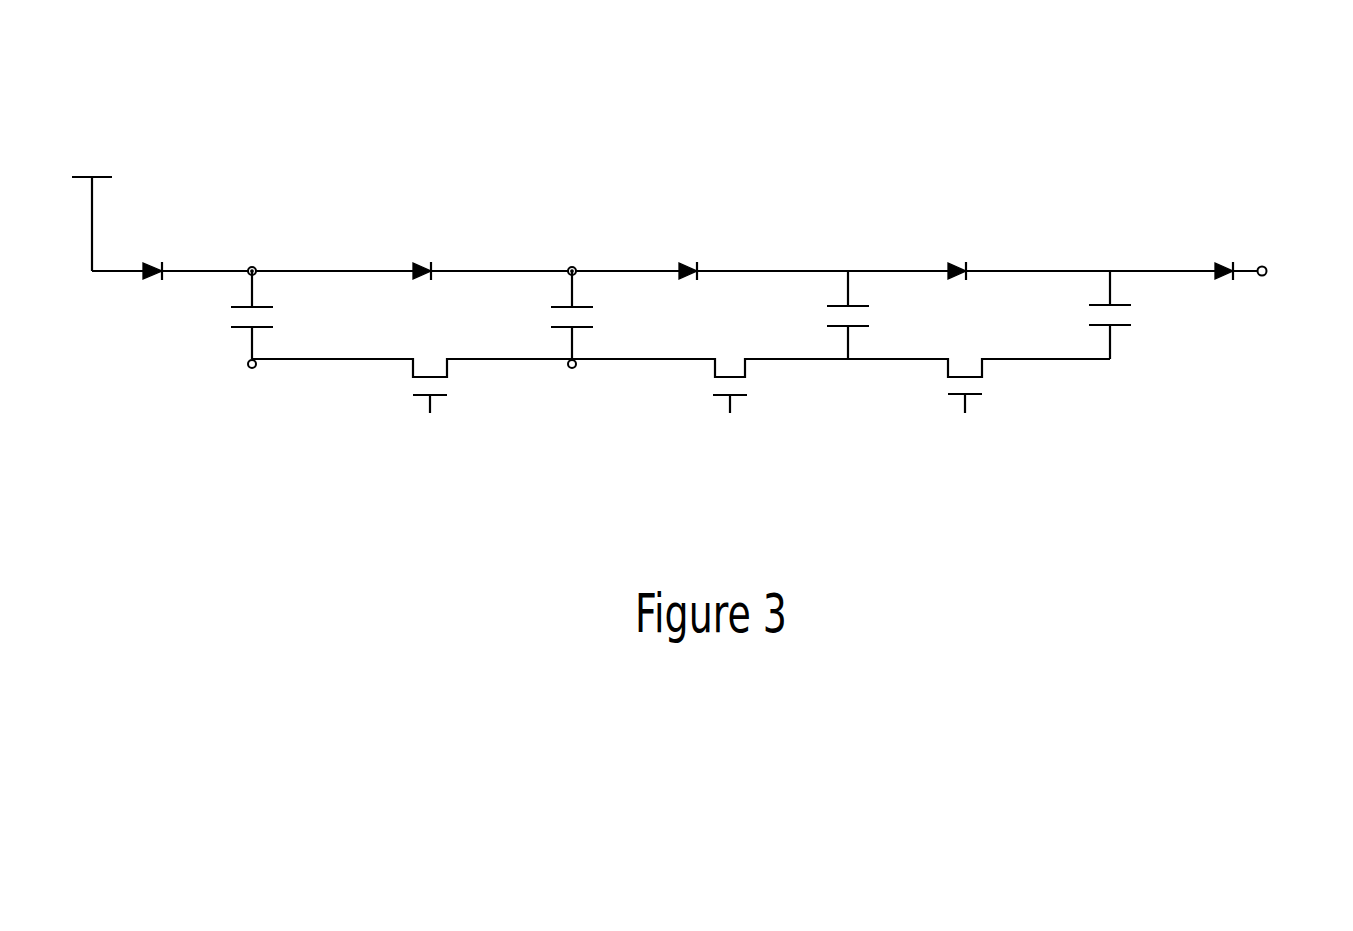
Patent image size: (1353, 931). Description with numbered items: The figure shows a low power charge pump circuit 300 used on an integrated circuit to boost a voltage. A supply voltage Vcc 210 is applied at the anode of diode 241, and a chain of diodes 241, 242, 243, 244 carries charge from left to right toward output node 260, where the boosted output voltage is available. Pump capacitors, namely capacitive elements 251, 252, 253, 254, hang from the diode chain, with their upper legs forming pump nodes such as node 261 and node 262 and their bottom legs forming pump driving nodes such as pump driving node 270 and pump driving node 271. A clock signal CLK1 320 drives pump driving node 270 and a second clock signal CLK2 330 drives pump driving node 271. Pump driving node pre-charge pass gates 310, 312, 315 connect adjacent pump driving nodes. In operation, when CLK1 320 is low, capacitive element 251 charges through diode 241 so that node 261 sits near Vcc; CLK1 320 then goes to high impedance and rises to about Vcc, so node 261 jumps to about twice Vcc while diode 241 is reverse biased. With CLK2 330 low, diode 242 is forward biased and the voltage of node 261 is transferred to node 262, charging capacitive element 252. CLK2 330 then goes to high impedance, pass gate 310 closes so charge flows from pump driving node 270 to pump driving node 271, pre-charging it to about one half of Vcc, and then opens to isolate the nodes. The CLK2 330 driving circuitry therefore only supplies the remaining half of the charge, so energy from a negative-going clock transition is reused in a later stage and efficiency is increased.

The low power charge pump circuit 300 is at (324, 52).
The supply voltage Vcc 210 is at (118, 202).
The diode 241 is at (160, 262).
The diode 242 is at (429, 262).
The diode 243 is at (695, 262).
The diode 244 is at (964, 262).
The capacitive element 251 is at (232, 320).
The capacitive element 252 is at (553, 318).
The capacitive element 253 is at (830, 318).
The capacitive element 254 is at (1094, 316).
The output node 260 is at (1275, 271).
The node 261 is at (255, 266).
The node 262 is at (575, 265).
The pump driving node 270 is at (247, 372).
The pump driving node 271 is at (567, 372).
The pump driving node pre-charge pass gate 310 is at (408, 393).
The pump driving node pre-charge pass gate 312 is at (713, 390).
The pump driving node pre-charge pass gate 315 is at (952, 391).
The CLK1 320 is at (254, 373).
The CLK2 330 is at (574, 373).